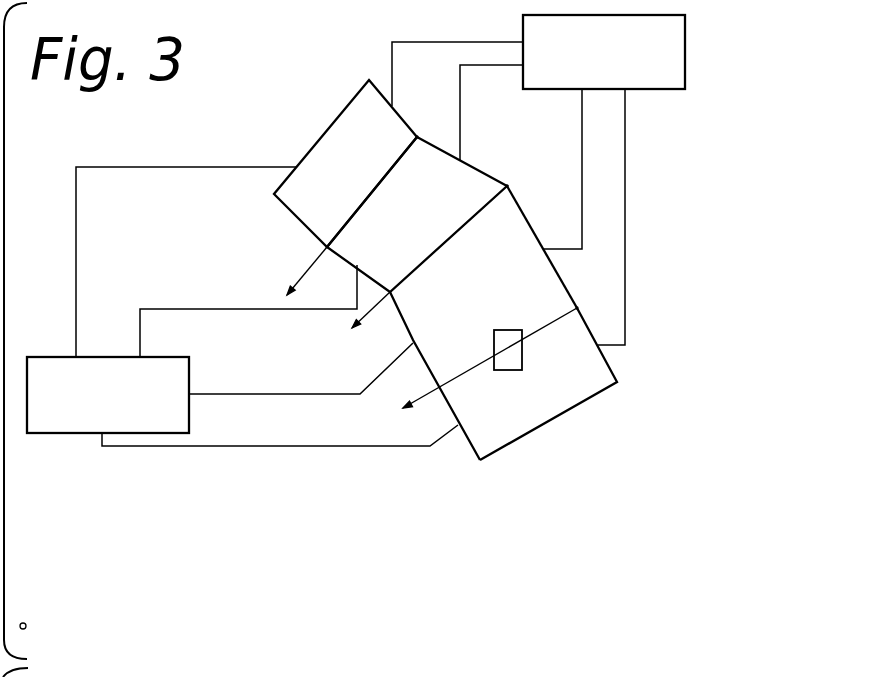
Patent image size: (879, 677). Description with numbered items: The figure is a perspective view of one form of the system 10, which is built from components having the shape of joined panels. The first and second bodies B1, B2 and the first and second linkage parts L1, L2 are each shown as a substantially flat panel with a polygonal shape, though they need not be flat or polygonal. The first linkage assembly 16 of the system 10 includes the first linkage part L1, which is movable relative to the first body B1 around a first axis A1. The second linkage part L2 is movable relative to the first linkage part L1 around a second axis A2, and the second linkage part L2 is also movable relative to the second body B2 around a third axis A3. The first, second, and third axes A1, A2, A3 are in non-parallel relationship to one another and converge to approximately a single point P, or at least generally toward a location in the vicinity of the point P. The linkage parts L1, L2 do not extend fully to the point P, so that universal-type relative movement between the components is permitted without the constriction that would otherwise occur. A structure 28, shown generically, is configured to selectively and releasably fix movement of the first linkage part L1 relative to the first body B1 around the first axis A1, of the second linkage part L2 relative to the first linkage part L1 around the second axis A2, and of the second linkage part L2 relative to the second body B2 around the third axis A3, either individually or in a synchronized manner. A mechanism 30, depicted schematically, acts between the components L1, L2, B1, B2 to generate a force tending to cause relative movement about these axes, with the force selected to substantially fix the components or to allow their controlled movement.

The system 10 is at (703, 158).
The first linkage assembly 16 is at (518, 151).
The structure 28 is at (610, 80).
The mechanism 30 is at (115, 423).
The point P is at (26, 625).
The first axis A1 is at (592, 301).
The second axis A2 is at (520, 175).
The third axis A3 is at (430, 126).
The first body B1 is at (548, 384).
The second body B2 is at (345, 163).
The first linkage part L1 is at (483, 323).
The second linkage part L2 is at (417, 214).